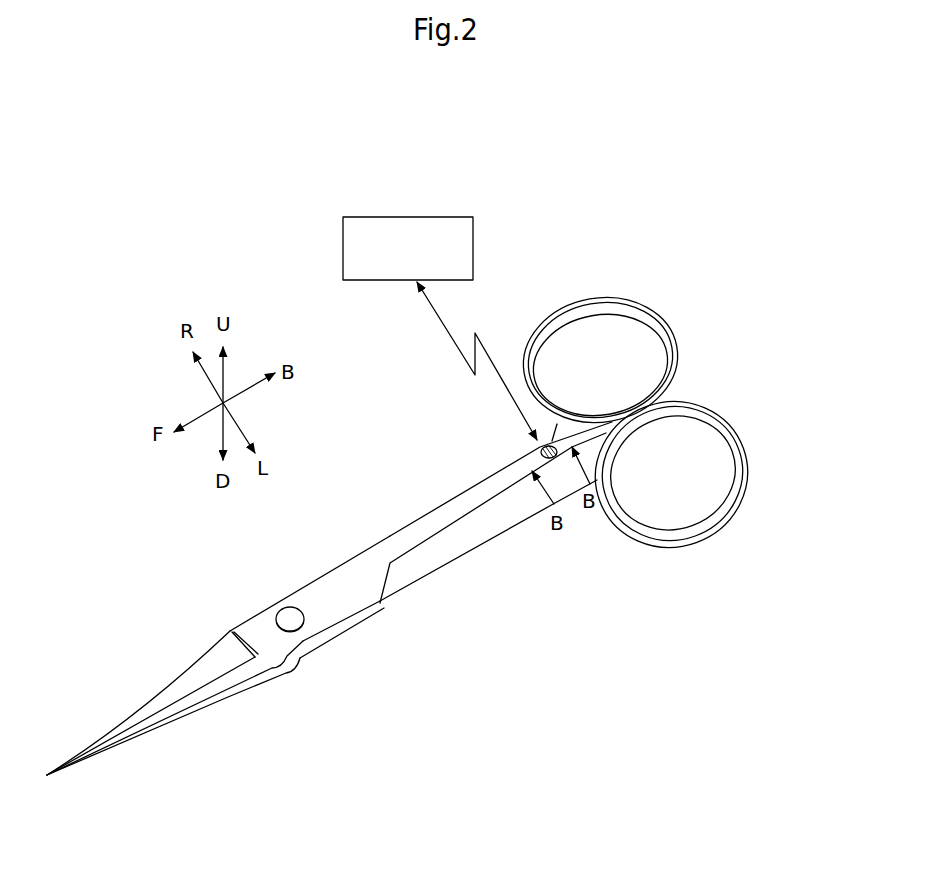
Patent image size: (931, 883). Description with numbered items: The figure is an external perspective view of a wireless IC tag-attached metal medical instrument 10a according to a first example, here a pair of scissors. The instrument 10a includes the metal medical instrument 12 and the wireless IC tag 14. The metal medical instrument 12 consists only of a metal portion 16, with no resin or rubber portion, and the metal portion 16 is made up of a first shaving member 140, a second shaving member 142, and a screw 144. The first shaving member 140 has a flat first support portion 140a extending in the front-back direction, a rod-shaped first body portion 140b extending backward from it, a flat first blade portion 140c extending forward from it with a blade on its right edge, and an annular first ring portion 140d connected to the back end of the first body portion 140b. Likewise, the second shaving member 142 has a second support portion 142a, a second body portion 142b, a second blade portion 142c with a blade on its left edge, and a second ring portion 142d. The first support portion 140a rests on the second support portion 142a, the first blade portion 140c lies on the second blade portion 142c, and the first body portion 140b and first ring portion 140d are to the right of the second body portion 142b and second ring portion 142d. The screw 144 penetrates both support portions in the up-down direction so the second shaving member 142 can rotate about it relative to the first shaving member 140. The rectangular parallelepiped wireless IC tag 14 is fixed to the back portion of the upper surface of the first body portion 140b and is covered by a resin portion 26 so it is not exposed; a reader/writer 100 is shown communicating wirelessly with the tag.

The wireless IC tag-attached metal medical instrument 10a is at (392, 366).
The metal medical instrument 12 is at (435, 528).
The metal portion 16 is at (189, 654).
The wireless IC tag 14 is at (560, 447).
The resin portion 26 is at (549, 446).
The reader/writer 100 is at (343, 263).
The first shaving member 140 is at (388, 528).
The first support portion 140a is at (310, 595).
The first body portion 140b is at (427, 525).
The first blade portion 140c is at (160, 695).
The first ring portion 140d is at (643, 312).
The second shaving member 142 is at (435, 577).
The second support portion 142a is at (355, 625).
The second body portion 142b is at (463, 543).
The second blade portion 142c is at (227, 697).
The second ring portion 142d is at (746, 456).
The screw 144 is at (288, 620).